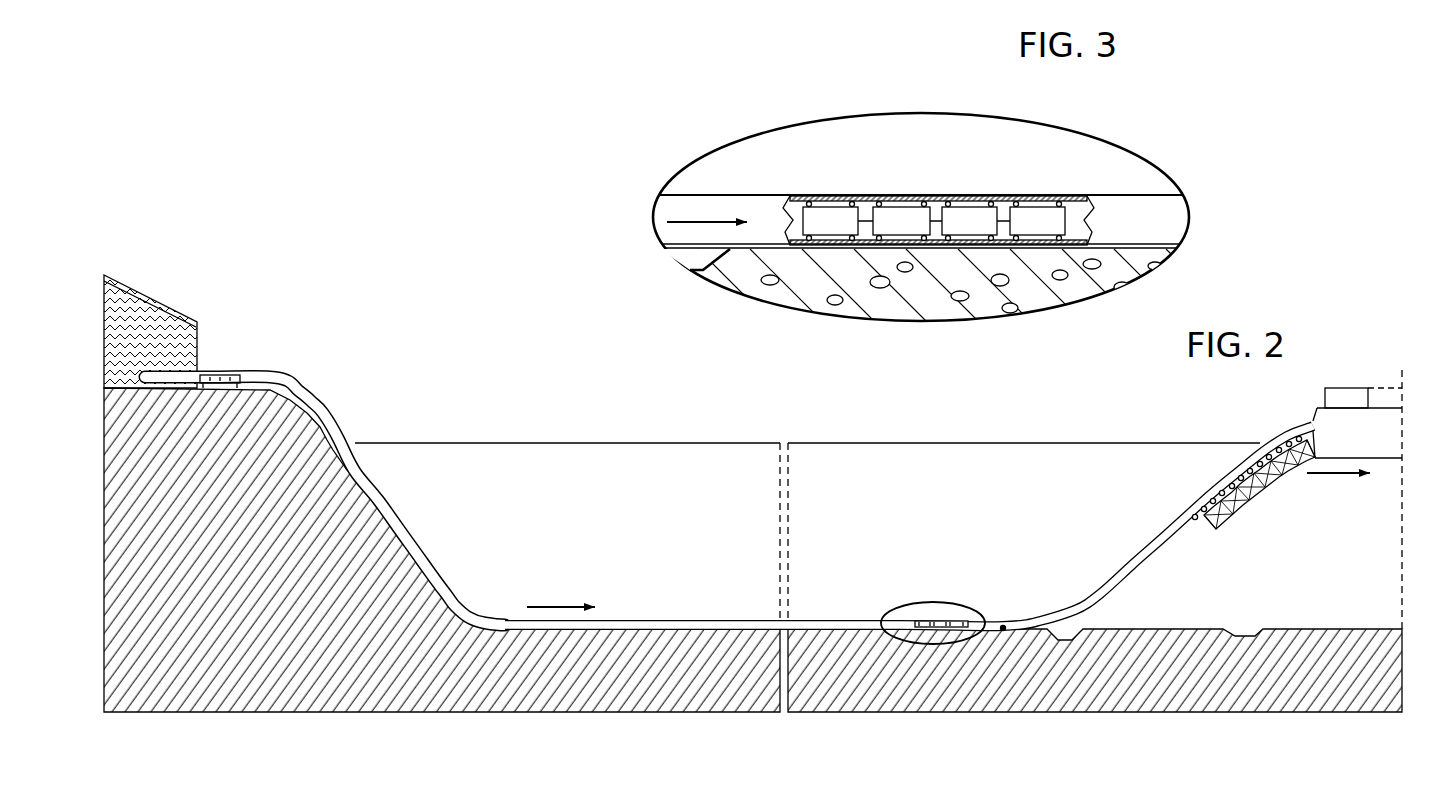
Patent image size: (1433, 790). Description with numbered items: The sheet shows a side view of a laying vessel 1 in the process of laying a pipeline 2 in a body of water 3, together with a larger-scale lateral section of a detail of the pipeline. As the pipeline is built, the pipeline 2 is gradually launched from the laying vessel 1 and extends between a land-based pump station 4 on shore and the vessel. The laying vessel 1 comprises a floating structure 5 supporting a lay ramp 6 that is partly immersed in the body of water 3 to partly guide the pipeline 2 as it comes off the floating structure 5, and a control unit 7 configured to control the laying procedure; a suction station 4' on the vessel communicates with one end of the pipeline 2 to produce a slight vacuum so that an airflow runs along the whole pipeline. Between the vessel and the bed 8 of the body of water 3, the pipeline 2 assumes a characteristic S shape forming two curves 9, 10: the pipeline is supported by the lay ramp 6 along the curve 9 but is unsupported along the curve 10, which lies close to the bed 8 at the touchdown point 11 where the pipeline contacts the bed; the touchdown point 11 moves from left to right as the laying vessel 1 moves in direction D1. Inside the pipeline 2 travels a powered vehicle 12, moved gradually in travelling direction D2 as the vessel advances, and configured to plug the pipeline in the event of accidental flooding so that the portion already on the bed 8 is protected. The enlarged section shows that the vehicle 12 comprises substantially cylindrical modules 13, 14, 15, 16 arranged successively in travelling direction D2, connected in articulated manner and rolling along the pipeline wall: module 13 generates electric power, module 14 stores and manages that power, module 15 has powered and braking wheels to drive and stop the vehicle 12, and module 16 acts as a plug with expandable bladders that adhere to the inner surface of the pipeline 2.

In FIG. 2, the laying vessel 1 is at (1383, 366).
In FIG. 2, the pipeline 2 is at (697, 621).
In FIG. 3, the pipeline 2 is at (692, 205).
In FIG. 2, the body of water 3 is at (1025, 478).
In FIG. 2, the land-based pump station 4 is at (186, 312).
In FIG. 2, the suction station 4' is at (1374, 362).
In FIG. 2, the floating structure 5 is at (1388, 445).
In FIG. 2, the lay ramp 6 is at (1280, 488).
In FIG. 2, the control unit 7 is at (1340, 400).
In FIG. 2, the bed 8 is at (735, 650).
In FIG. 3, the bed 8 is at (853, 270).
In FIG. 2, the curve 9 is at (1195, 490).
In FIG. 2, the curve 10 is at (1130, 587).
In FIG. 2, the touchdown point 11 is at (1003, 628).
In FIG. 2, the powered vehicle 12 is at (954, 617).
In FIG. 3, the powered vehicle 12 is at (1095, 220).
In FIG. 3, the module 13 is at (840, 185).
In FIG. 3, the module 14 is at (913, 185).
In FIG. 3, the module 15 is at (968, 185).
In FIG. 3, the module 16 is at (1038, 185).
In FIG. 2, the direction D1 is at (1326, 478).
In FIG. 2, the travelling direction D2 is at (556, 604).
In FIG. 3, the travelling direction D2 is at (688, 228).